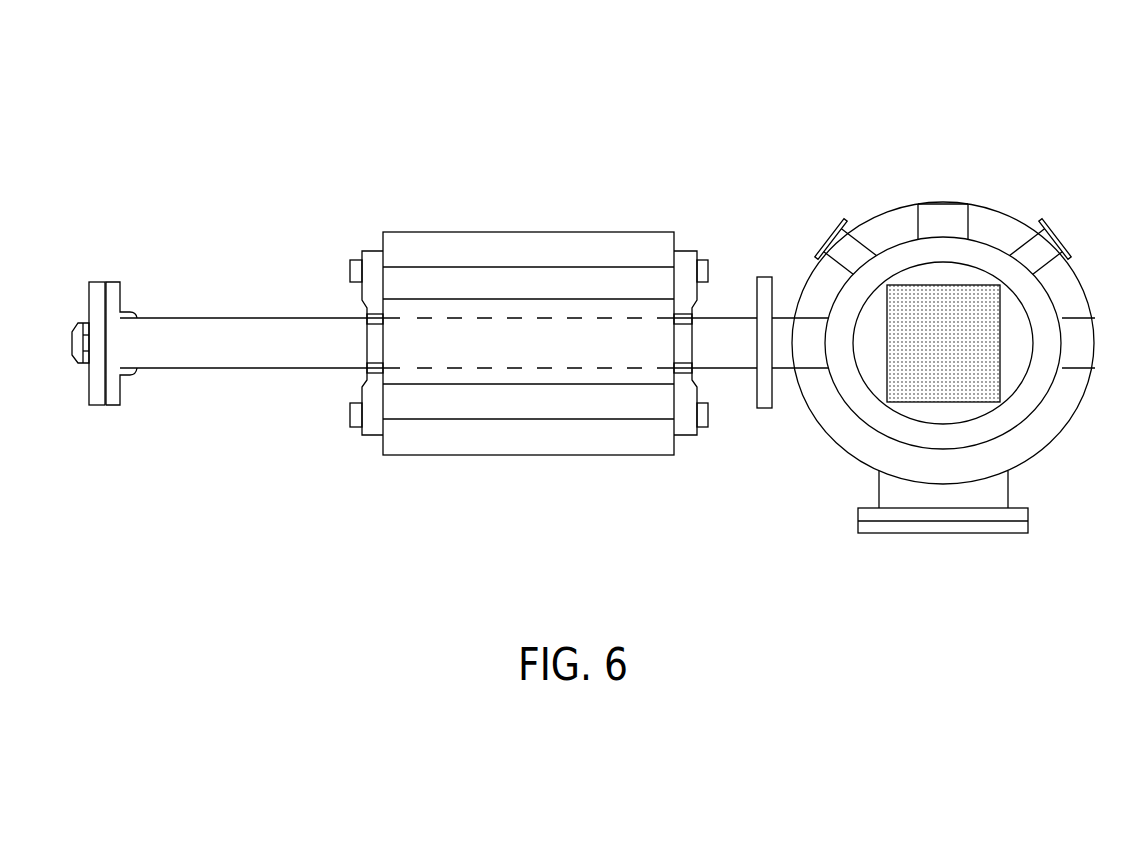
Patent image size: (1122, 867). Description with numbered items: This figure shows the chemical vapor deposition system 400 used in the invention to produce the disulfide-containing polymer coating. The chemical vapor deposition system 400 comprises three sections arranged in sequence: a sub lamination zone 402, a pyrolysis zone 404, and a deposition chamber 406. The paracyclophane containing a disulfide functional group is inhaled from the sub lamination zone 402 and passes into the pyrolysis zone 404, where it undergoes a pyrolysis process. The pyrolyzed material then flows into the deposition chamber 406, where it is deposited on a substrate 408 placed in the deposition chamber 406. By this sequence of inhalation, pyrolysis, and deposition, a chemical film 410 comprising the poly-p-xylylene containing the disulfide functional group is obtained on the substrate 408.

The chemical vapor deposition system 400 is at (208, 78).
The sub lamination zone 402 is at (233, 317).
The pyrolysis zone 404 is at (525, 230).
The deposition chamber 406 is at (900, 190).
The substrate 408 is at (1030, 525).
The chemical film 410 is at (1030, 513).